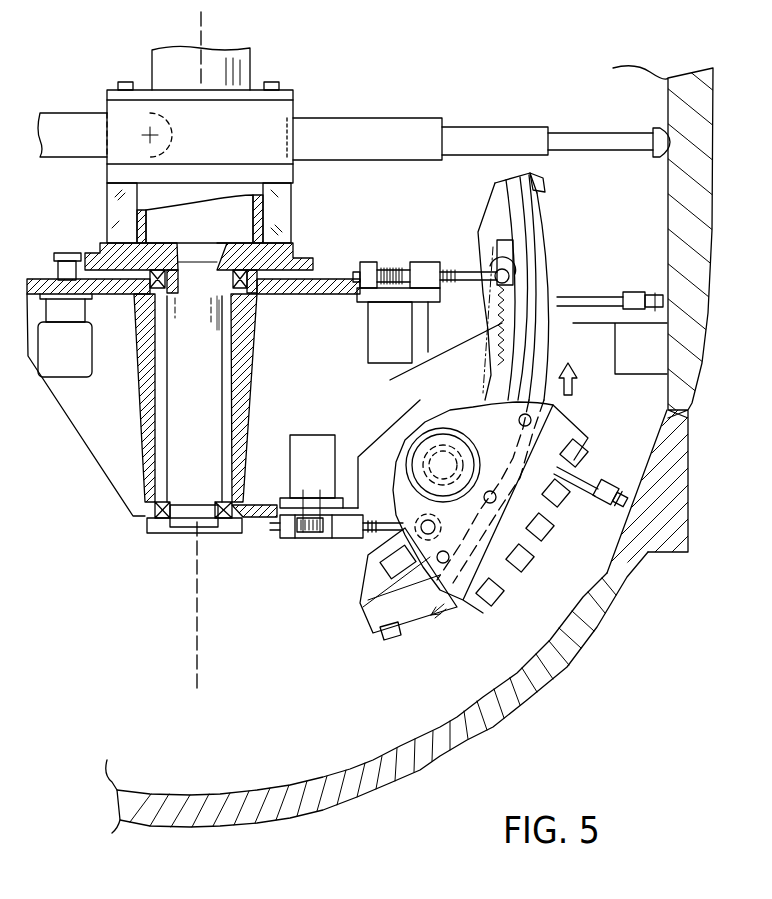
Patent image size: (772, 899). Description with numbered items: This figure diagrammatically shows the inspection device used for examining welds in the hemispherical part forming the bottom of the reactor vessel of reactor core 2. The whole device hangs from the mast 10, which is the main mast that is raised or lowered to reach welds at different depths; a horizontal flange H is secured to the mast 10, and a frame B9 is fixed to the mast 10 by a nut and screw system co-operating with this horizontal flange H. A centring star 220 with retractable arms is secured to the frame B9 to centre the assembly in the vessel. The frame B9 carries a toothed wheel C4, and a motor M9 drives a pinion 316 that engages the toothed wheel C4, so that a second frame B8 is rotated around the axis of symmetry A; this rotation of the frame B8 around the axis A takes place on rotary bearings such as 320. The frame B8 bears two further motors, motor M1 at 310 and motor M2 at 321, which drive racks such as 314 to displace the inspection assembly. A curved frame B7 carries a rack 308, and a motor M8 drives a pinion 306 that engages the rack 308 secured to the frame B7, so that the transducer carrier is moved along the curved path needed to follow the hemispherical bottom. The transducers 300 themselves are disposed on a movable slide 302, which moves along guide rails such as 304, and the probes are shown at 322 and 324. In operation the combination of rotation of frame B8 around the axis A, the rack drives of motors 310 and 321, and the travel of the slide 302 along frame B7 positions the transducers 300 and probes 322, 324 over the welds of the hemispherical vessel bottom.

The axis of symmetry A is at (216, 348).
The reactor core 2 is at (684, 101).
The mast 10 is at (264, 72).
The horizontal flange H is at (307, 103).
The star having three retractable arms 220 is at (393, 126).
The frame B9 is at (283, 206).
The toothed wheel C4 is at (318, 265).
The pinion 316 is at (68, 258).
The motor M9 is at (58, 361).
The rotary bearing 320 is at (146, 524).
The frame B8 is at (250, 525).
The motor M1 310 is at (310, 452).
The motor M8 is at (420, 432).
The motor M2 321 is at (378, 325).
The rack 314 is at (462, 272).
The frame B7 is at (472, 208).
The guide rail 304 is at (555, 282).
The probe 324 is at (638, 290).
The transducers 300 is at (530, 570).
The pinion 306 is at (440, 432).
The rack 308 is at (392, 379).
The probe 322 is at (590, 516).
The movable slide 302 is at (450, 605).